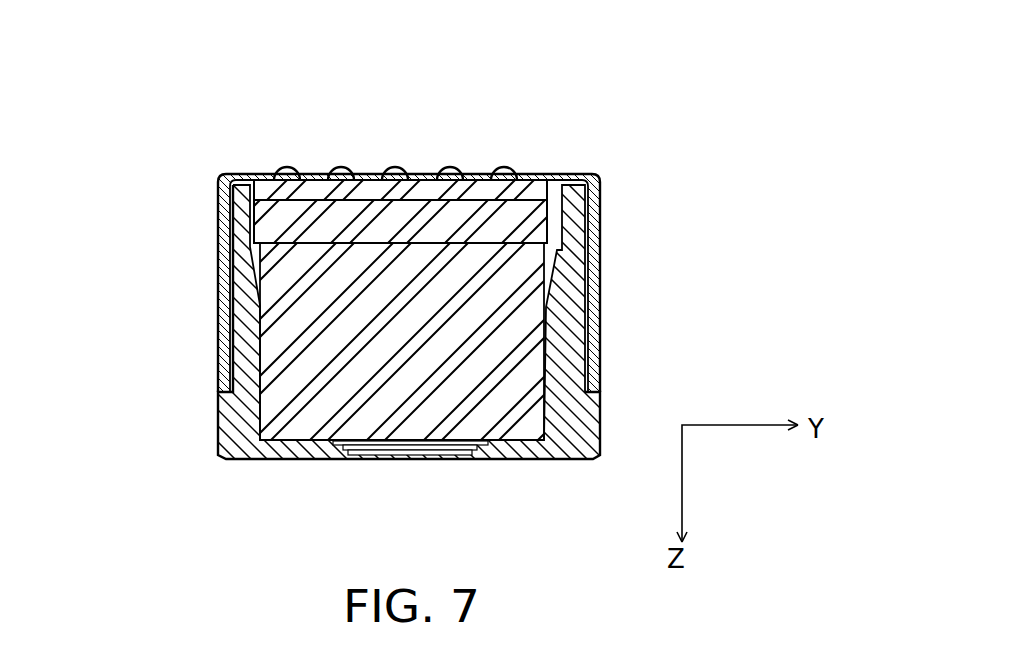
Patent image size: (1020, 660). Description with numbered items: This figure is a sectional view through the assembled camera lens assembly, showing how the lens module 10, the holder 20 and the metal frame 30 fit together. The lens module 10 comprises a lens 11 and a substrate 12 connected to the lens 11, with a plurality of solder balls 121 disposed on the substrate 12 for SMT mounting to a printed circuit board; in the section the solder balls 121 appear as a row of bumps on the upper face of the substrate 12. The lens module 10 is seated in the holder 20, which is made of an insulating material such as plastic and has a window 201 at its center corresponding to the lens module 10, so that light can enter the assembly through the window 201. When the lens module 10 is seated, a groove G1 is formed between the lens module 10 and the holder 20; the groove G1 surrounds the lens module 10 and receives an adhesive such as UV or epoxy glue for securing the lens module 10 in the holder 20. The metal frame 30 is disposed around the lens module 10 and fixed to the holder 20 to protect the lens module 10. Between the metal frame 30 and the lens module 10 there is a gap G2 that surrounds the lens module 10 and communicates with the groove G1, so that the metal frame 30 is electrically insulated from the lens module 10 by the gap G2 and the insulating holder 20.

The lens module 10 is at (408, 245).
The lens 11 is at (288, 328).
The substrate 12 is at (367, 213).
The solder balls 121 is at (449, 167).
The holder 20 is at (429, 370).
The window 201 is at (410, 460).
The metal frame 30 is at (597, 173).
The groove G1 is at (252, 220).
The gap G2 is at (250, 180).